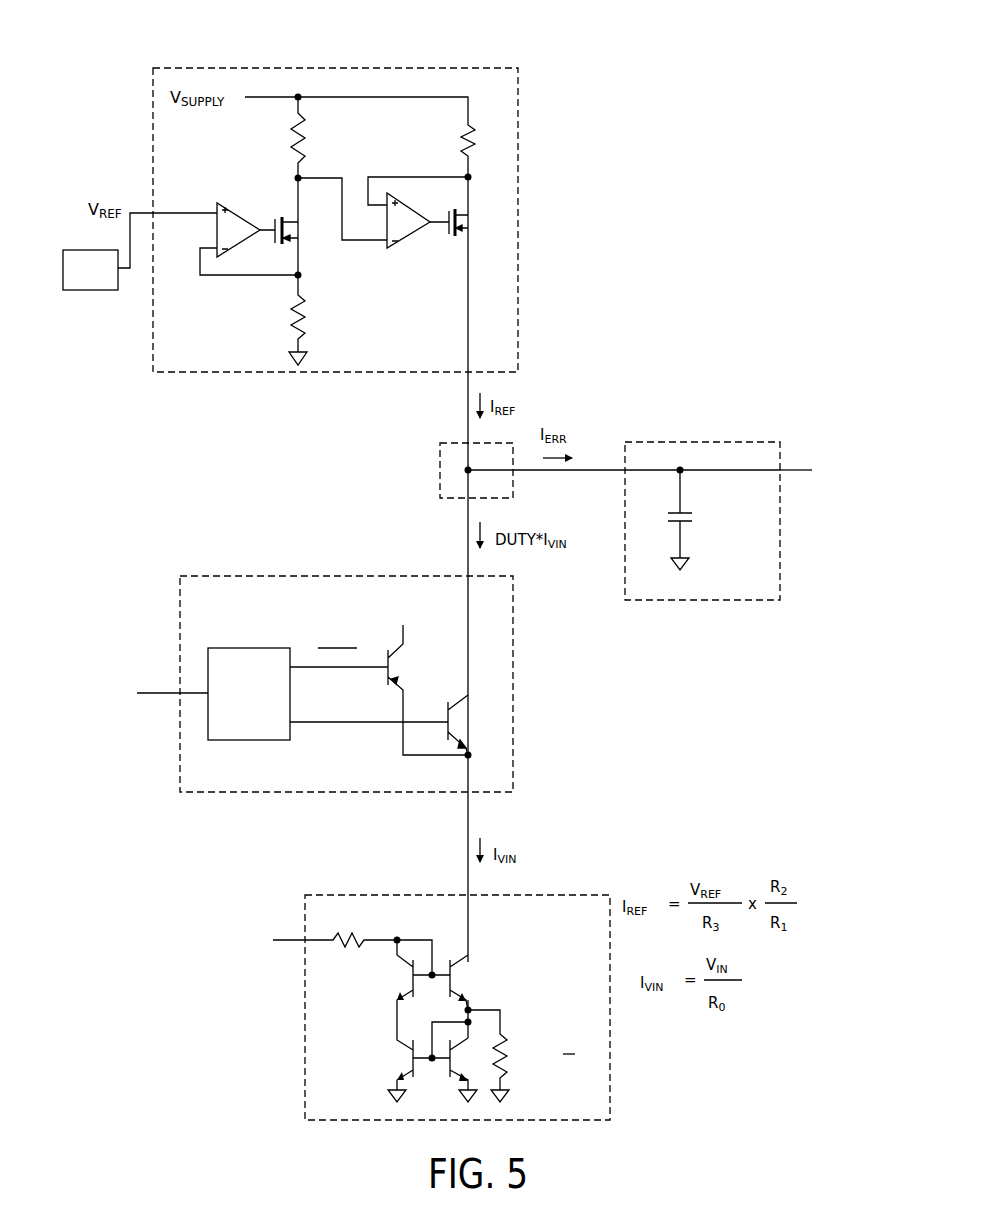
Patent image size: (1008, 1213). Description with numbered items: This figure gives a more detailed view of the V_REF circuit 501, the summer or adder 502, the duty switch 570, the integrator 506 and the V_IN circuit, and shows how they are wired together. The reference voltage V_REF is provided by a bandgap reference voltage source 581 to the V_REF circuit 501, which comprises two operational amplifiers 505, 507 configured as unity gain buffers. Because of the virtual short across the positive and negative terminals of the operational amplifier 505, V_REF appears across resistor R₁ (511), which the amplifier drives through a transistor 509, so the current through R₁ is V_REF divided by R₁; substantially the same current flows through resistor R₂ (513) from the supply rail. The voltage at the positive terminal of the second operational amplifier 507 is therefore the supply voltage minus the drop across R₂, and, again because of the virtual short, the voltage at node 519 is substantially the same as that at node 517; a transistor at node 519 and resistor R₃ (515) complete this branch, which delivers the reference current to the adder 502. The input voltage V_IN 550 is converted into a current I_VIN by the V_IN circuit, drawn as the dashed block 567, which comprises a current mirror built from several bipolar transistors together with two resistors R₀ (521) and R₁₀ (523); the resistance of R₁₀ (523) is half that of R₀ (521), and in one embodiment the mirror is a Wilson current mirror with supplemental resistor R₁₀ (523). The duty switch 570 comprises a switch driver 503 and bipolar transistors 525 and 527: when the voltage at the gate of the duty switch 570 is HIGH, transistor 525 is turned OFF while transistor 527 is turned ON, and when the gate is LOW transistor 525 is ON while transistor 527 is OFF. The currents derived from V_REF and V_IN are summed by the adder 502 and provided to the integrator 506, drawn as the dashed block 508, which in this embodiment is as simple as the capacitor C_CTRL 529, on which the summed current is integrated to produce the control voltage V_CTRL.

The V_REF circuit 501 is at (522, 80).
The summer 502 is at (438, 456).
The switch driver 503 is at (258, 646).
The operational amplifier 505 is at (250, 216).
The integrator 506 is at (795, 478).
The second operational amplifier 507 is at (412, 240).
The integrator 508 is at (785, 452).
The transistor 509 is at (290, 238).
The resistor R1 511 is at (276, 311).
The resistor R2 513 is at (302, 128).
The resistor R3 515 is at (512, 140).
The node 517 is at (343, 176).
The node 519 is at (470, 198).
The resistor R0 521 is at (364, 932).
The resistor R10 523 is at (610, 1044).
The bipolar transistor 525 is at (408, 662).
The bipolar transistor 527 is at (478, 720).
The capacitor C_CTRL 529 is at (665, 518).
The input voltage V_IN 550 is at (287, 935).
The input current generator 567 is at (338, 893).
The duty switch 570 is at (322, 572).
The bandgap reference voltage source 581 is at (78, 291).